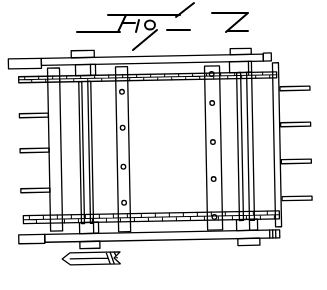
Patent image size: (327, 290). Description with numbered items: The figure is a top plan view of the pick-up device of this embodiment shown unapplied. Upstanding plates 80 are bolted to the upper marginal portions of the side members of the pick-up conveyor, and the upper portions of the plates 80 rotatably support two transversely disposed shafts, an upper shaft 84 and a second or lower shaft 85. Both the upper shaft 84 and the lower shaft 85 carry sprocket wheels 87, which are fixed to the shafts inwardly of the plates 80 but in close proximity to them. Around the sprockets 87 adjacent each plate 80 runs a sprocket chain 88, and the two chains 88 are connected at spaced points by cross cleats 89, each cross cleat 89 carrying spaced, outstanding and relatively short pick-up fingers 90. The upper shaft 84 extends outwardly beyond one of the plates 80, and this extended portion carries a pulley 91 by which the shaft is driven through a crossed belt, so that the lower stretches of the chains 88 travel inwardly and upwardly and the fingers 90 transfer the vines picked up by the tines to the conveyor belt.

The upstanding plate 80 is at (143, 57).
The upper shaft 84 is at (80, 149).
The lower shaft 85 is at (280, 150).
The sprocket wheel 87 is at (66, 84).
The sprocket chain 88 is at (152, 81).
The cross cleat 89 is at (129, 145).
The pick-up finger 90 is at (28, 115).
The pulley 91 is at (60, 254).